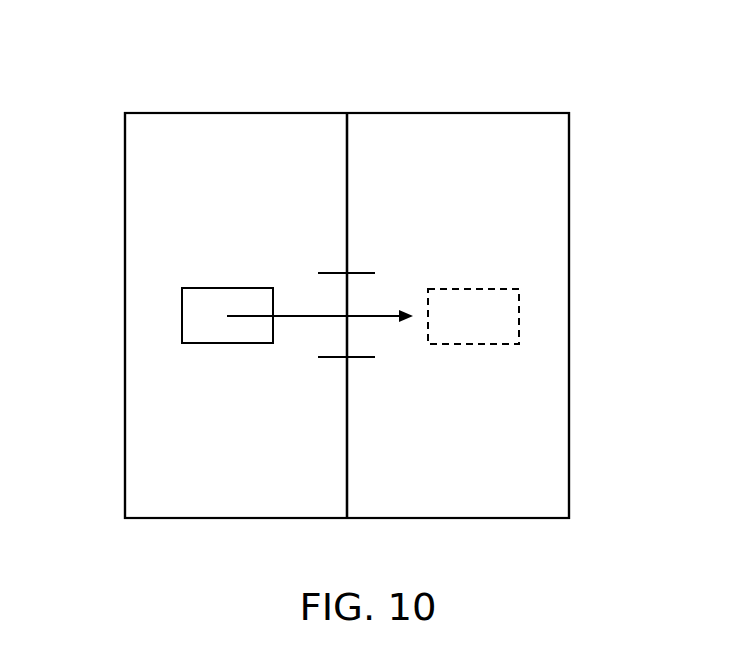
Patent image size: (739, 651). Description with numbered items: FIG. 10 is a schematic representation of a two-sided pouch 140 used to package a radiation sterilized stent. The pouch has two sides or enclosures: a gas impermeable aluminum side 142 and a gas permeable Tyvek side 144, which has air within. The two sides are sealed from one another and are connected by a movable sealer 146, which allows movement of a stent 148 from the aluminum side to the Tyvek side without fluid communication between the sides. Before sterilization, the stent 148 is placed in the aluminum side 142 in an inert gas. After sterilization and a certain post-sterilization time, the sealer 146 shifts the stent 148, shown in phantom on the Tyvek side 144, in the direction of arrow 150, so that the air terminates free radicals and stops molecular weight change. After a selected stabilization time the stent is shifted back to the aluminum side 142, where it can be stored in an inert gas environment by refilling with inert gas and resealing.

The two-sided pouch 140 is at (166, 42).
The gas impermeable aluminum side 142 is at (232, 112).
The gas permeable Tyvek side 144 is at (481, 112).
The movable sealer 146 is at (360, 340).
The stent 148 is at (205, 313).
The arrow 150 is at (313, 337).